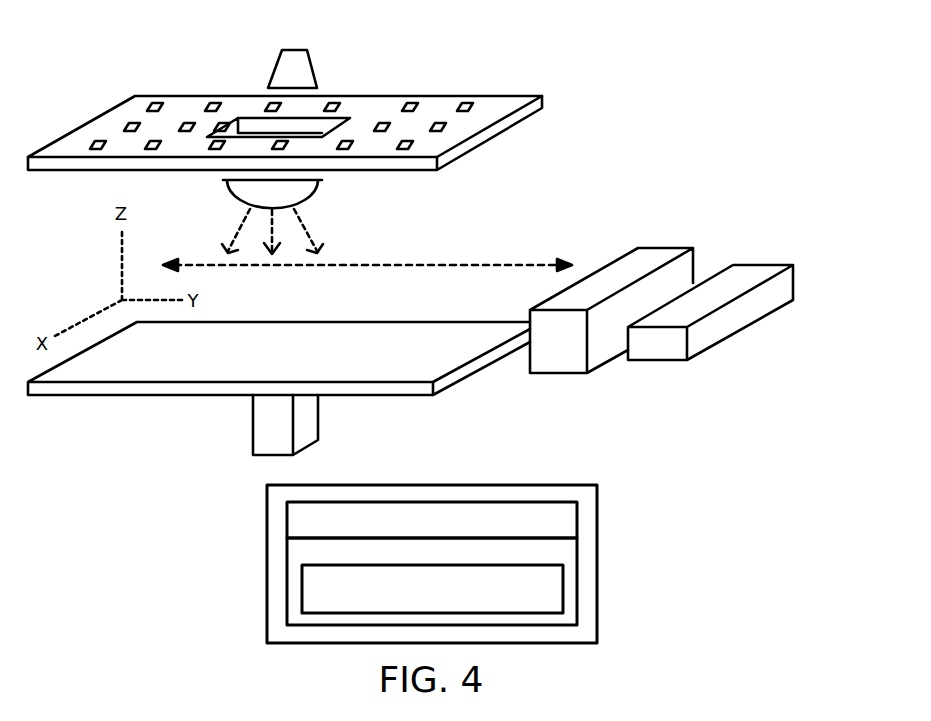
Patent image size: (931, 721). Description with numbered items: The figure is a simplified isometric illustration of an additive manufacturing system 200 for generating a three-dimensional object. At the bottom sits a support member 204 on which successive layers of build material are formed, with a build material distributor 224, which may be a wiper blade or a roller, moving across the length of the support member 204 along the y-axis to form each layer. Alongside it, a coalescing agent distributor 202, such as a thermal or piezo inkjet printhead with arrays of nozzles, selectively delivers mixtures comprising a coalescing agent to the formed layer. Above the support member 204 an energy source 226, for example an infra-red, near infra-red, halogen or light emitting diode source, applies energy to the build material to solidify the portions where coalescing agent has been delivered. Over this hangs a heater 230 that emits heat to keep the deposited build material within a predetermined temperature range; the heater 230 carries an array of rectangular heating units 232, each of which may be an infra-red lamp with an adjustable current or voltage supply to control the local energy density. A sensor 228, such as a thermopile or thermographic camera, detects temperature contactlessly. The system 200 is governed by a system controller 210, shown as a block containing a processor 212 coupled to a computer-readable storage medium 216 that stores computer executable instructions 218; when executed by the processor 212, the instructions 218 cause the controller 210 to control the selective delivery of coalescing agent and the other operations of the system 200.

The additive manufacturing system 200 is at (655, 194).
The coalescing agent distributor 202 is at (660, 362).
The support member 204 is at (393, 320).
The system controller 210 is at (400, 564).
The processor 212 is at (432, 520).
The computer-readable storage medium 216 is at (432, 581).
The computer executable instructions 218 is at (432, 589).
The build material distributor 224 is at (645, 248).
The energy source 226 is at (317, 187).
The sensor 228 is at (293, 47).
The heater 230 is at (285, 115).
The heating units 232 is at (128, 121).